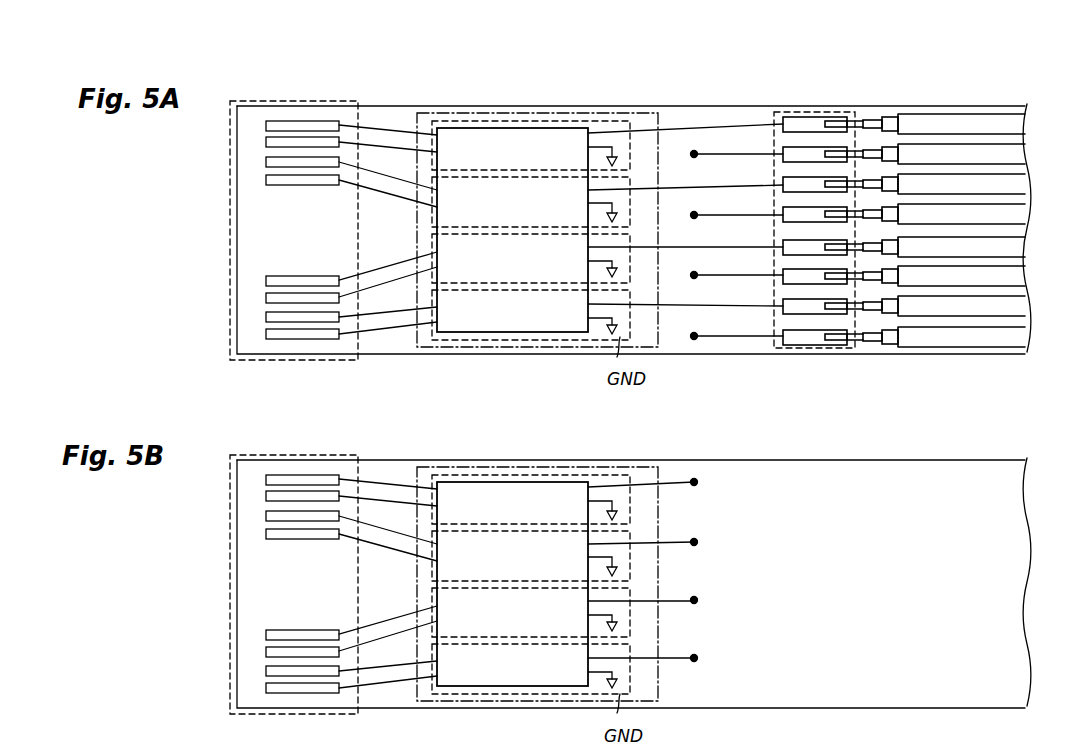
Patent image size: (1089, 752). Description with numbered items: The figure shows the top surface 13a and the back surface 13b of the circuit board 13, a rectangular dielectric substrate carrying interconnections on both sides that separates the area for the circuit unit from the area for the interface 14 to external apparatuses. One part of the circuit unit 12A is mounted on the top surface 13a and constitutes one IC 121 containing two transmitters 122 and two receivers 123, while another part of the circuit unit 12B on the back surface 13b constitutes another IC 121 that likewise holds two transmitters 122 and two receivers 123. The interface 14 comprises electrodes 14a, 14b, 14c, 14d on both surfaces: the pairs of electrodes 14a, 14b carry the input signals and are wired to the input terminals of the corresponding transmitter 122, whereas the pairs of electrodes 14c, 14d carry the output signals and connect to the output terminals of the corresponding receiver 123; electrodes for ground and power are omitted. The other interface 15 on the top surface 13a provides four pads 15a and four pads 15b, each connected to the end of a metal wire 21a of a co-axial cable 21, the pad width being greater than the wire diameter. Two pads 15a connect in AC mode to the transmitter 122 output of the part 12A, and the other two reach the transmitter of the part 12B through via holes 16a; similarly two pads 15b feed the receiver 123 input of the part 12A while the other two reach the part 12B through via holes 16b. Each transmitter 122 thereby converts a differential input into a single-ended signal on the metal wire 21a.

In FIG. 5A, the circuit board 13 is at (735, 105).
In FIG. 5B, the circuit board 13 is at (634, 546).
In FIG. 5A, the top surface 13a is at (713, 118).
In FIG. 5B, the back surface 13b is at (631, 444).
In FIG. 5A, the interface 14 is at (293, 100).
In FIG. 5B, the interface 14 is at (294, 550).
In FIG. 5A, the electrode 14a is at (325, 122).
In FIG. 5B, the electrode 14a is at (269, 469).
In FIG. 5A, the electrode 14b is at (280, 143).
In FIG. 5B, the electrode 14b is at (257, 489).
In FIG. 5A, the electrode 14c is at (318, 280).
In FIG. 5B, the electrode 14c is at (258, 628).
In FIG. 5A, the electrode 14d is at (283, 297).
In FIG. 5B, the electrode 14d is at (257, 655).
In FIG. 5A, the part of the circuit unit 12A is at (605, 113).
In FIG. 5B, the another part of the circuit unit 12B is at (564, 561).
In FIG. 5A, the IC 121 is at (447, 128).
In FIG. 5B, the IC 121 is at (509, 555).
In FIG. 5A, the transmitter 122 is at (531, 174).
In FIG. 5B, the transmitter 122 is at (531, 528).
In FIG. 5A, the receiver 123 is at (531, 287).
In FIG. 5B, the receiver 123 is at (531, 641).
In FIG. 5A, the interface 15 is at (782, 112).
In FIG. 5A, the pad 15a is at (815, 185).
In FIG. 5A, the pad 15b is at (783, 207).
In FIG. 5A, the via hole 16a is at (694, 275).
In FIG. 5B, the via hole 16a is at (690, 512).
In FIG. 5A, the via hole 16b is at (694, 154).
In FIG. 5B, the via hole 16b is at (686, 629).
In FIG. 5A, the co-axial cable 21 is at (973, 125).
In FIG. 5A, the metal wire 21a is at (840, 118).